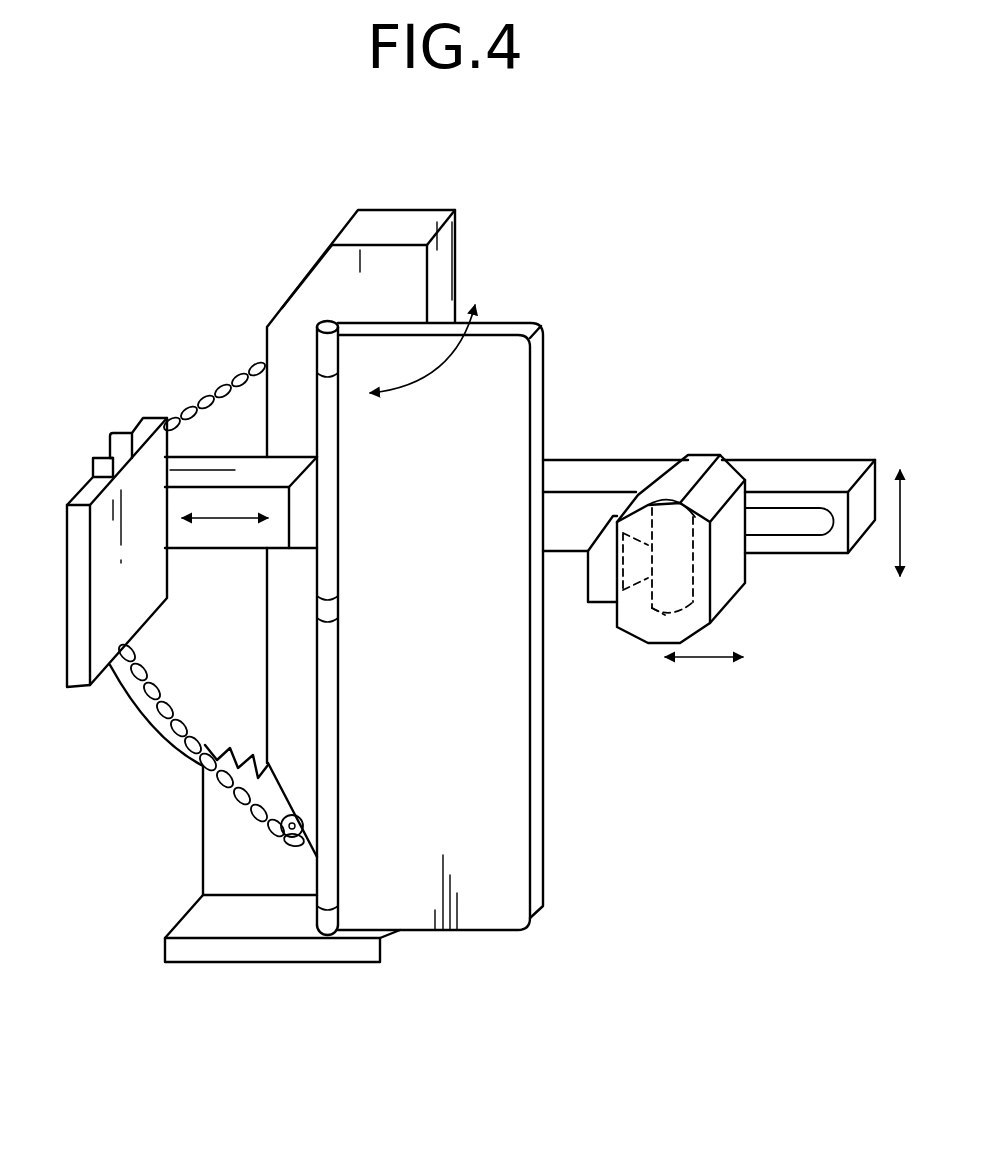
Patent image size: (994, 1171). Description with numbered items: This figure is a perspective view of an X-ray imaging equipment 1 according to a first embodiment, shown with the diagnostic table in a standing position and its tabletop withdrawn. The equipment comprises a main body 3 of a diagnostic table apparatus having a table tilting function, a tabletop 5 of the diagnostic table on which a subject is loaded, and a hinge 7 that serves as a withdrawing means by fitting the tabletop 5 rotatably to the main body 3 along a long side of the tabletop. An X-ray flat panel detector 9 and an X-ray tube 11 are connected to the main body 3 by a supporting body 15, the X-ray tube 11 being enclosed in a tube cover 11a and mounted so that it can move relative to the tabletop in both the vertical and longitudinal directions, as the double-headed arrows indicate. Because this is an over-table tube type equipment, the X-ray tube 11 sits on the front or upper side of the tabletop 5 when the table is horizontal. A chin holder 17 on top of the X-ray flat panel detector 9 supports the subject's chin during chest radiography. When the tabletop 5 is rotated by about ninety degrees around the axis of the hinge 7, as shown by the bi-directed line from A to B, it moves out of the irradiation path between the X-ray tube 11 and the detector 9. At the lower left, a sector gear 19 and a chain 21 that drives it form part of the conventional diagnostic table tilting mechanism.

The X-ray imaging equipment 1 is at (666, 810).
The main body of the diagnostic table apparatus 3 is at (327, 275).
The tabletop of the diagnostic table 5 is at (515, 323).
The hinge 7 is at (322, 323).
The X-ray flat panel detector 9 is at (150, 498).
The X-ray tube 11 is at (665, 615).
The tube cover 11a is at (730, 603).
The supporting body 15 is at (617, 470).
The chin holder 17 is at (107, 440).
The sector gear 19 is at (170, 677).
The chain 21 is at (240, 798).